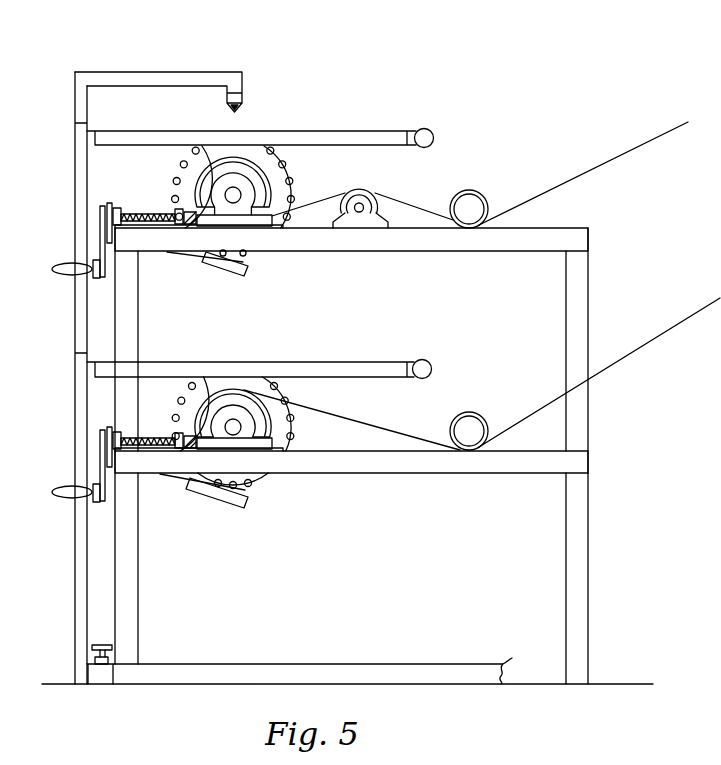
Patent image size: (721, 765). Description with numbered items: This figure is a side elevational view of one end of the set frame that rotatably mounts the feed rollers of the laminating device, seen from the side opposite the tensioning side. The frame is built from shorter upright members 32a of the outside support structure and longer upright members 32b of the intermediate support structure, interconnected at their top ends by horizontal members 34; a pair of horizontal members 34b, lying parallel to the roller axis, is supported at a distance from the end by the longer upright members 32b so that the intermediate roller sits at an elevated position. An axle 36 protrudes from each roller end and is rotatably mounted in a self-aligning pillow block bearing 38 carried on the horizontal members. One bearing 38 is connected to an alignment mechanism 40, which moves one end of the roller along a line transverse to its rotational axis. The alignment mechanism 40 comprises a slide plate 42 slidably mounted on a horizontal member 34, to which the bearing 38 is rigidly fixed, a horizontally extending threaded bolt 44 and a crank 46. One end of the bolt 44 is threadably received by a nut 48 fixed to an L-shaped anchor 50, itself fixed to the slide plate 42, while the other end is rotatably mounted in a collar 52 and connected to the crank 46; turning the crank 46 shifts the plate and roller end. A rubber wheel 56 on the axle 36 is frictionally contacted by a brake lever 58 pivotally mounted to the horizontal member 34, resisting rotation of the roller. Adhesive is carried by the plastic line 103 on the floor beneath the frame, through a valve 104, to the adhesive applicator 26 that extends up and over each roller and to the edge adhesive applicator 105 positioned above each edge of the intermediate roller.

The adhesive applicator 26 is at (430, 130).
The upright member 32a is at (589, 538).
The upright member 32b is at (589, 311).
The horizontal member 34 is at (363, 474).
The horizontal member 34b is at (333, 252).
The axle 36 is at (237, 194).
The self-aligning pillow block bearing 38 is at (241, 218).
The alignment mechanism 40 is at (138, 200).
The slide plate 42 is at (205, 243).
The threaded bolt 44 is at (137, 212).
The crank 46 is at (53, 272).
The nut 48 is at (174, 214).
The L-shaped anchor 50 is at (181, 226).
The collar 52 is at (110, 204).
The rubber wheel 56 is at (249, 152).
The brake lever 58 is at (230, 271).
The plastic line 103 is at (0, 313).
The valve 104 is at (100, 645).
The edge adhesive applicator 105 is at (235, 78).